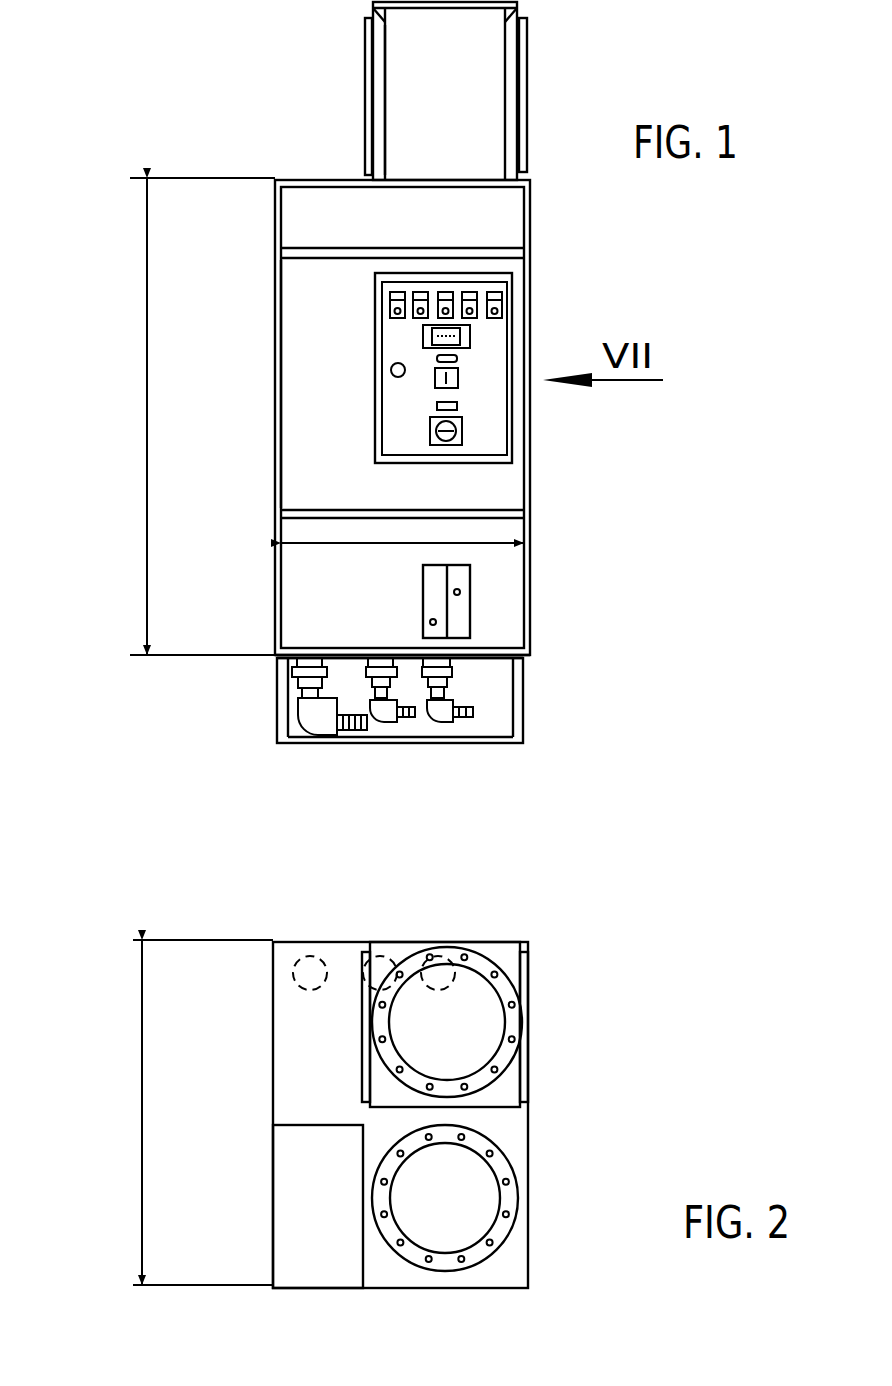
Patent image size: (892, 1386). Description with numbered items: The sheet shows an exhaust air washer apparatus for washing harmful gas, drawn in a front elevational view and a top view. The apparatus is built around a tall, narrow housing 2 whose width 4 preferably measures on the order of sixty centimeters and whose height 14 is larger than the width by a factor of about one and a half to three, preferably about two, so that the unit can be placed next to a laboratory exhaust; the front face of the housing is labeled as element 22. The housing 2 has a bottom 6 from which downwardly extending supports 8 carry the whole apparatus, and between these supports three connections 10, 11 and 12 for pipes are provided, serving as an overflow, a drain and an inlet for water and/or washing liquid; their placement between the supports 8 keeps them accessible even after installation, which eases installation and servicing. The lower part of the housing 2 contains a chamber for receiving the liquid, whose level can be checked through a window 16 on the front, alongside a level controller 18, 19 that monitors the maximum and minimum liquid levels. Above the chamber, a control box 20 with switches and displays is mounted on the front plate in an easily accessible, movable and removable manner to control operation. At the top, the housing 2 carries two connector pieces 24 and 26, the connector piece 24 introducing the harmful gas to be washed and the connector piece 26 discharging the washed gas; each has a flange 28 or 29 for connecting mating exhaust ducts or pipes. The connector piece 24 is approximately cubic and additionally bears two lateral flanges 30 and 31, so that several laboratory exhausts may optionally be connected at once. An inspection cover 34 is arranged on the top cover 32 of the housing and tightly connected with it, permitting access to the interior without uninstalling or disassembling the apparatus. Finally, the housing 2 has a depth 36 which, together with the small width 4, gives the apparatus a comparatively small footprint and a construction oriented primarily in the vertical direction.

In FIG. 1, the housing 2 is at (272, 477).
In FIG. 1, the width 4 is at (377, 543).
In FIG. 1, the bottom 6 is at (275, 664).
In FIG. 1, the supports 8 is at (278, 712).
In FIG. 1, the connection 10 is at (317, 722).
In FIG. 1, the connection 11 is at (385, 713).
In FIG. 1, the connection 12 is at (443, 718).
In FIG. 1, the height 14 is at (145, 417).
In FIG. 1, the window 16 is at (463, 630).
In FIG. 1, the level controller 18 is at (436, 621).
In FIG. 1, the level controller 19 is at (460, 590).
In FIG. 1, the control box 20 is at (502, 442).
In FIG. 1, the front door 22 is at (290, 423).
In FIG. 1, the connector piece 24 is at (378, 42).
In FIG. 2, the connector piece 24 is at (502, 1093).
In FIG. 1, the connector piece 26 is at (393, 83).
In FIG. 2, the connector piece 26 is at (505, 1242).
In FIG. 2, the flange 28 is at (505, 1057).
In FIG. 2, the flange 29 is at (510, 1197).
In FIG. 2, the lateral flange 30 is at (525, 967).
In FIG. 2, the lateral flange 31 is at (372, 1007).
In FIG. 2, the top cover 32 is at (292, 1082).
In FIG. 2, the inspection cover 34 is at (287, 1200).
In FIG. 2, the depth 36 is at (140, 1115).